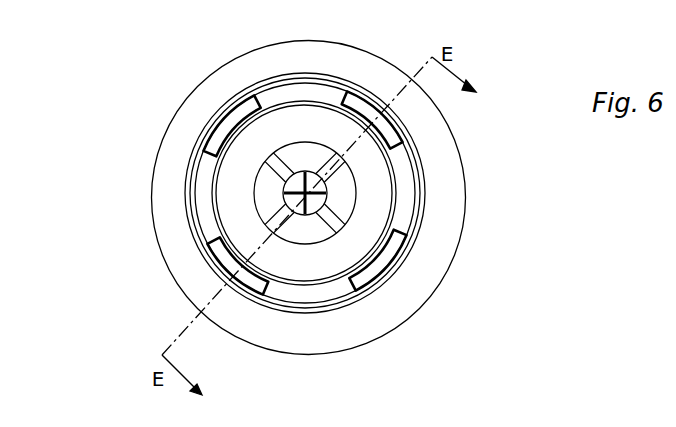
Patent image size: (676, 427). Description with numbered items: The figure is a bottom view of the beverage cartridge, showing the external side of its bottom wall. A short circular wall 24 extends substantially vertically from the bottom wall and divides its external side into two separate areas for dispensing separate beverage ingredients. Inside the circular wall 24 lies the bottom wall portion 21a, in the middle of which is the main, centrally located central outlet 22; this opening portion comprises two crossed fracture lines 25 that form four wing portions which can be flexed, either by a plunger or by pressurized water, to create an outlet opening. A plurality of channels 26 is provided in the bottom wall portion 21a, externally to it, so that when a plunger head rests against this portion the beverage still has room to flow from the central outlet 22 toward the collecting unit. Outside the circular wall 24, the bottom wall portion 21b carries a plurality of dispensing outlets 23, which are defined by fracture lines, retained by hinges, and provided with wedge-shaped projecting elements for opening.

The bottom wall portion 21a is at (373, 194).
The bottom wall portion 21b is at (408, 202).
The central outlet 22 is at (297, 180).
The dispensing outlets 23 is at (388, 130).
The circular wall 24 is at (303, 283).
The crossed fracture lines 25 is at (270, 223).
The channels 26 is at (322, 165).